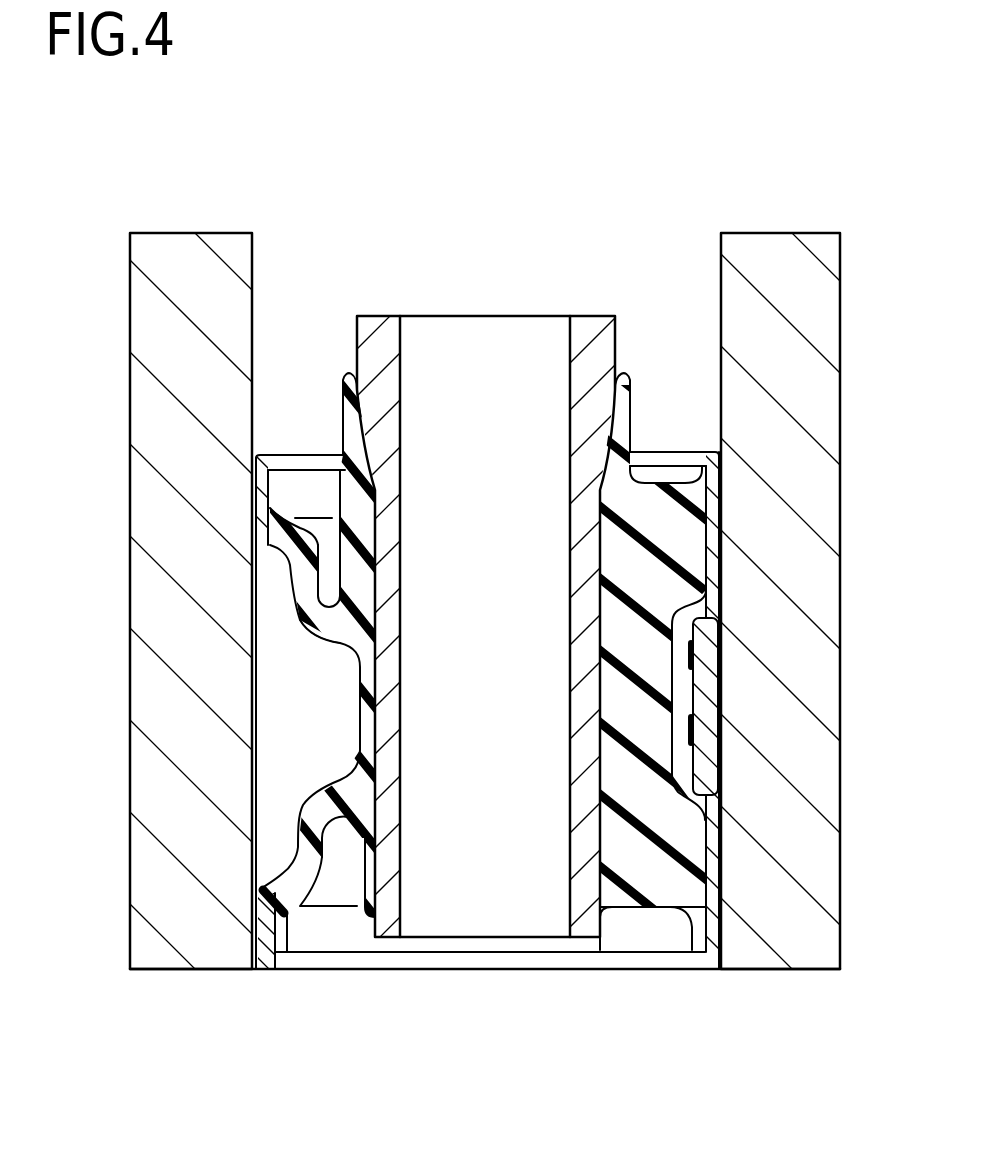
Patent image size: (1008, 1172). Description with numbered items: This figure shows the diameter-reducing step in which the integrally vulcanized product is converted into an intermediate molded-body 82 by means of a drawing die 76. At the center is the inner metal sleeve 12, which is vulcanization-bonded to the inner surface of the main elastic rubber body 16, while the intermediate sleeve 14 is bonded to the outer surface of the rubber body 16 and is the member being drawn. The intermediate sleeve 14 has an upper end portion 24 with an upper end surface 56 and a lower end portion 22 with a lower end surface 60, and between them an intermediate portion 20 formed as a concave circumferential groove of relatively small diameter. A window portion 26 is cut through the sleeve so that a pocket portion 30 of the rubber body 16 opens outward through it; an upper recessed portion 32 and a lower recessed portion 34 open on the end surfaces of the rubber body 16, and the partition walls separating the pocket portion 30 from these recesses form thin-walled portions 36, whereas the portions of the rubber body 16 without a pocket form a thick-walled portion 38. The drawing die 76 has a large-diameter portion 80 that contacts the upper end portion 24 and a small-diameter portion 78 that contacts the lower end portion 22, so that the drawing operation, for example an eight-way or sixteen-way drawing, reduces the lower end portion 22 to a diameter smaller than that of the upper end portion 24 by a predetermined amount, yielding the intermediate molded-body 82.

The inner metal sleeve 12 is at (386, 305).
The intermediate sleeve 14 is at (552, 650).
The main elastic rubber body 16 is at (643, 925).
The intermediate portion 20 is at (680, 695).
The lower end portion 22 is at (712, 908).
The upper end portion 24 is at (743, 659).
The window portion 26 is at (268, 532).
The pocket portion 30 is at (295, 573).
The upper recessed portion 32 is at (318, 527).
The lower recessed portion 34 is at (325, 857).
The thin-walled portion 36 is at (303, 600).
The thick-walled portion 38 is at (680, 845).
The upper end surface 56 is at (713, 450).
The lower end surface 60 is at (268, 968).
The drawing die 76 is at (190, 220).
The small-diameter portion 78 is at (232, 868).
The large-diameter portion 80 is at (235, 511).
The intermediate molded-body 82 is at (508, 268).